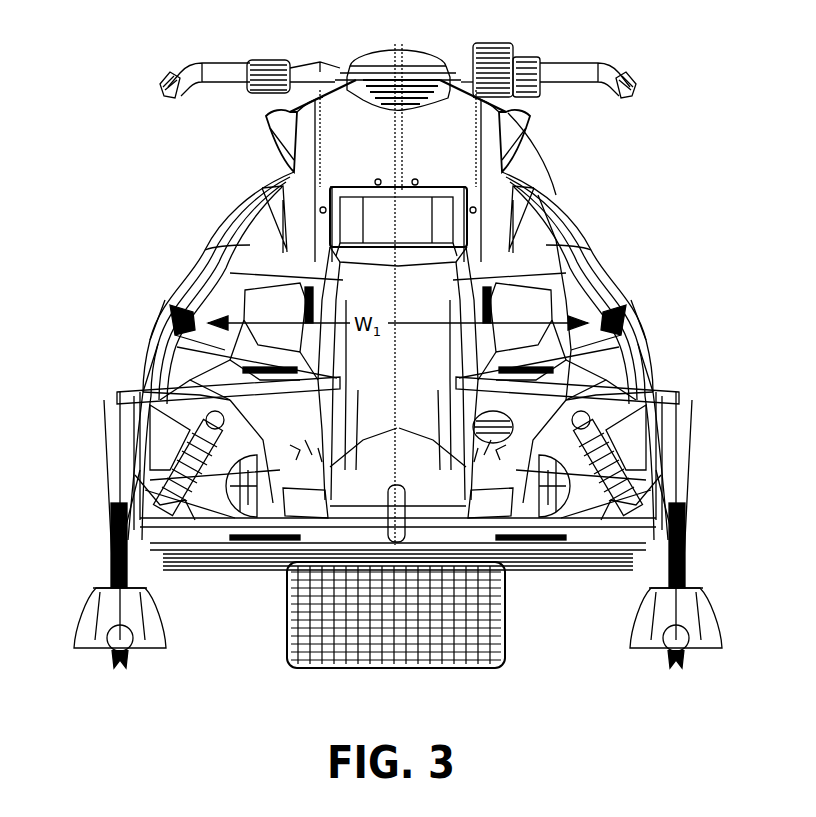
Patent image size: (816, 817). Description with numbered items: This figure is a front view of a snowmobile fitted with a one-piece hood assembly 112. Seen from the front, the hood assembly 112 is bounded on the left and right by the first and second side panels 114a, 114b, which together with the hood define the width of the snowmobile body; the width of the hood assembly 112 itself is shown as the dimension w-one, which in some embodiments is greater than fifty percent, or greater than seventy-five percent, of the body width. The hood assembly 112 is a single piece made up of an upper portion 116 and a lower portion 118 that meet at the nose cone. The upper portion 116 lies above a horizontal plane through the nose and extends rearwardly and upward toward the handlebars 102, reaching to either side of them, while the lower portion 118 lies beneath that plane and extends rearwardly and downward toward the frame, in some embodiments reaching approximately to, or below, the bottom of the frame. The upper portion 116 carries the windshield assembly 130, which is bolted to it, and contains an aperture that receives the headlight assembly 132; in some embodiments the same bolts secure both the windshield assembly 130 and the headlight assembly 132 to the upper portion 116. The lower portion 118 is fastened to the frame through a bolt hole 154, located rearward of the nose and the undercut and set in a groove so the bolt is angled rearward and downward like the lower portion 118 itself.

The handlebars 102 is at (407, 50).
The windshield assembly 130 is at (351, 118).
The headlight assembly 132 is at (440, 216).
The one-piece hood assembly 112 is at (568, 210).
The first side panel 114a is at (618, 266).
The second side panel 114b is at (192, 258).
The upper portion 116 is at (355, 292).
The lower portion 118 is at (372, 470).
The bolt hole 154 is at (400, 512).